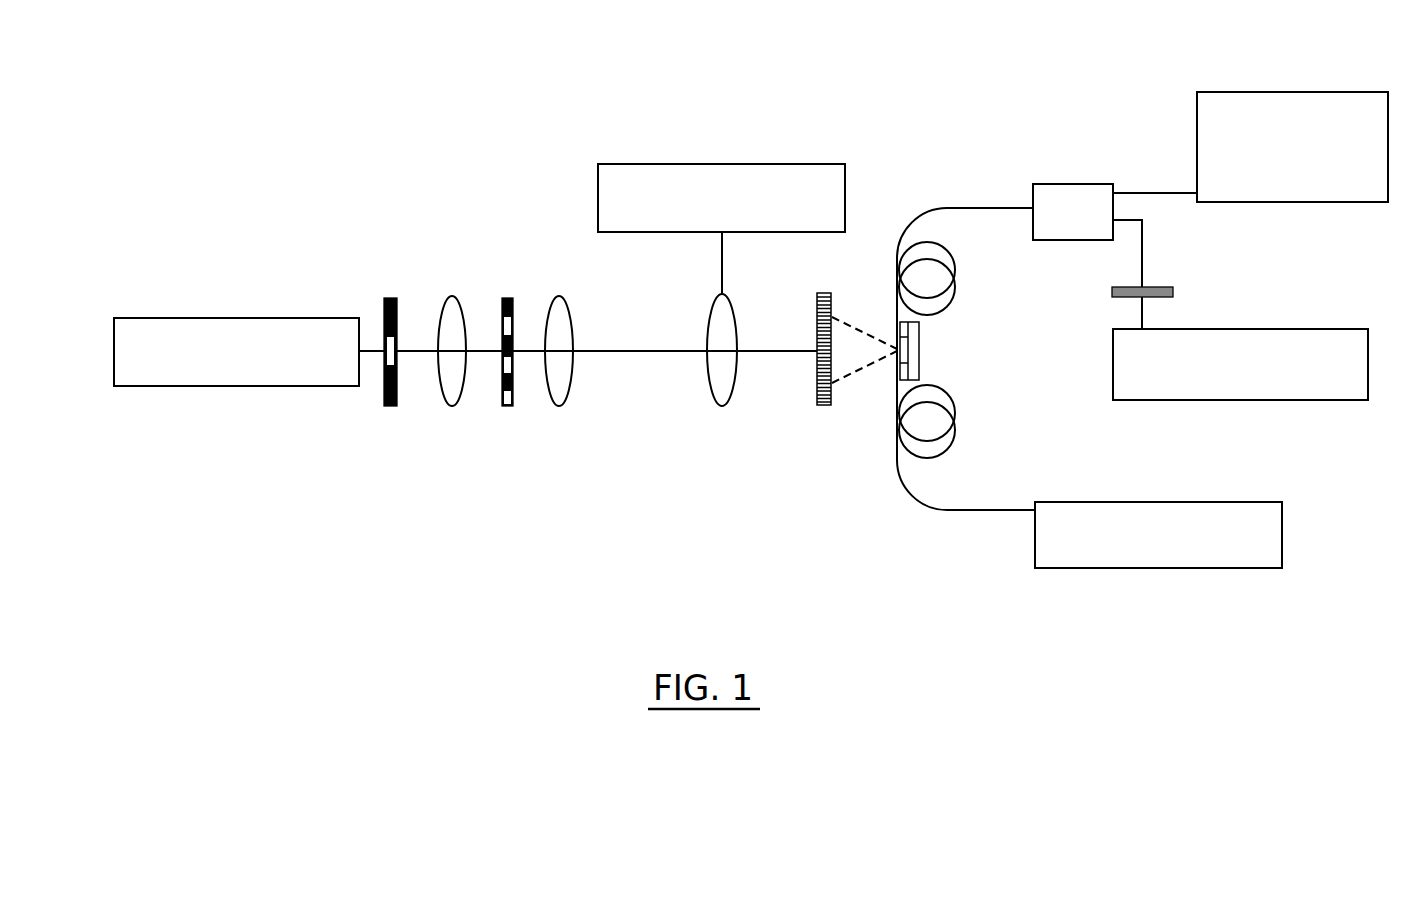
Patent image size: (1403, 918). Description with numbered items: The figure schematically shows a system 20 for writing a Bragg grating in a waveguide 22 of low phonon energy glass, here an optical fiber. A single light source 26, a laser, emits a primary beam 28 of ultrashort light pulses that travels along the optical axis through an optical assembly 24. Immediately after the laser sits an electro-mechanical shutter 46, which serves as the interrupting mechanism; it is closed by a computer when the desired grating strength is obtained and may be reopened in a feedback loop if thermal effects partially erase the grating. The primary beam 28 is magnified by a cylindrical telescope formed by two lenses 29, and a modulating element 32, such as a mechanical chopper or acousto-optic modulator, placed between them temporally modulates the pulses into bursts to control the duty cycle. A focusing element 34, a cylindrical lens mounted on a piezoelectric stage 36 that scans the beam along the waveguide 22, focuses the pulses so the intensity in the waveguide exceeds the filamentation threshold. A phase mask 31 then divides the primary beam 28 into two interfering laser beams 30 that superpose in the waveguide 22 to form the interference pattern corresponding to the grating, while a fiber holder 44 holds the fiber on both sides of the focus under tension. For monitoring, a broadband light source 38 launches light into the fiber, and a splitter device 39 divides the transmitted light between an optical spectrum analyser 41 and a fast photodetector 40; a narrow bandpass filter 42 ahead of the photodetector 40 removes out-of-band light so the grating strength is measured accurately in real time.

The system 20 is at (405, 503).
The waveguide 22 is at (896, 360).
The optical assembly 24 is at (424, 258).
The light source 26 is at (172, 318).
The primary beam 28 is at (644, 352).
The lenses 29 is at (445, 405).
The laser beams 30 is at (845, 358).
The phase mask 31 is at (816, 383).
The modulating element 32 is at (507, 298).
The focusing element 34 is at (716, 406).
The piezoelectric stage 36 is at (728, 164).
The broadband light source 38 is at (1282, 552).
The splitter device 39 is at (1040, 184).
The photodetector 40 is at (1318, 329).
The optical spectrum analyser 41 is at (1285, 92).
The narrow bandpass filter 42 is at (1158, 285).
The fiber holder 44 is at (922, 362).
The electro-mechanical shutter 46 is at (388, 298).